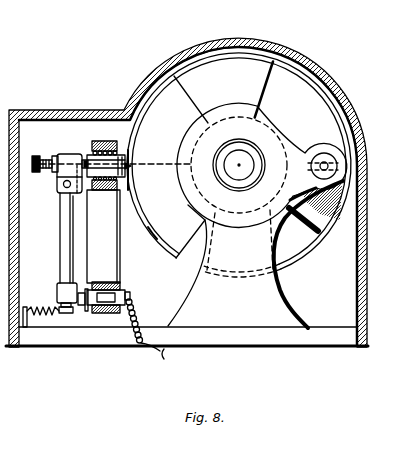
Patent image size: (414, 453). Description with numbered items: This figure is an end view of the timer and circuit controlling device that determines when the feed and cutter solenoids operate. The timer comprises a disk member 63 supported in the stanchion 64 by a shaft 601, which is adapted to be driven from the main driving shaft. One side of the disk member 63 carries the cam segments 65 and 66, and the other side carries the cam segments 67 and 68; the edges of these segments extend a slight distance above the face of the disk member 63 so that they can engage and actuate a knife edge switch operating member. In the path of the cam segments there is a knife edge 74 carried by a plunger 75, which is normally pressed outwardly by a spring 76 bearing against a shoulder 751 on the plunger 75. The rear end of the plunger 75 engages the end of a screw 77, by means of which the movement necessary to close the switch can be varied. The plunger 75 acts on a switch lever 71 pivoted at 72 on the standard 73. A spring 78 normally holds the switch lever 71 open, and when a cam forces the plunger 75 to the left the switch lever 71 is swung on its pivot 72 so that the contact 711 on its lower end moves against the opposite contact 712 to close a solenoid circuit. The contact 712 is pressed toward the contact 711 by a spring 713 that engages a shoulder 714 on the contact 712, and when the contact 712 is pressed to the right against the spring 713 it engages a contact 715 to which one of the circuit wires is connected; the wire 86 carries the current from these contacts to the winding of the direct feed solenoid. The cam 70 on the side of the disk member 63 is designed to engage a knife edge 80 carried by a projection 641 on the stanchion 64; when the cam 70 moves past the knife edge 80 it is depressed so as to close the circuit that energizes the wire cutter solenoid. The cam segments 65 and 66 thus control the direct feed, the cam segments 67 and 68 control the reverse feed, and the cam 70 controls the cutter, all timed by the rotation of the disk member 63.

The disk member 63 is at (167, 100).
The stanchion 64 is at (276, 297).
The projection on stanchion 641 is at (314, 146).
The cam segment 65 is at (162, 250).
The cam segment 66 is at (314, 233).
The cam segment 67 is at (191, 260).
The cam segment 68 is at (226, 62).
The cam 70 is at (327, 237).
The switch lever 71 is at (60, 263).
The contact 711 is at (81, 305).
The contact 712 is at (86, 311).
The spring 713 is at (110, 313).
The shoulder 714 is at (90, 284).
The contact 715 is at (130, 295).
The pivot 72 is at (64, 186).
The standard 73 is at (100, 237).
The knife edge 74 is at (126, 162).
The plunger 75 is at (88, 156).
The shoulder 751 is at (152, 234).
The spring 76 is at (100, 145).
The screw 77 is at (37, 155).
The spring 78 is at (43, 316).
The knife edge 80 is at (249, 165).
The shaft 601 is at (240, 170).
The wire 86 is at (168, 355).